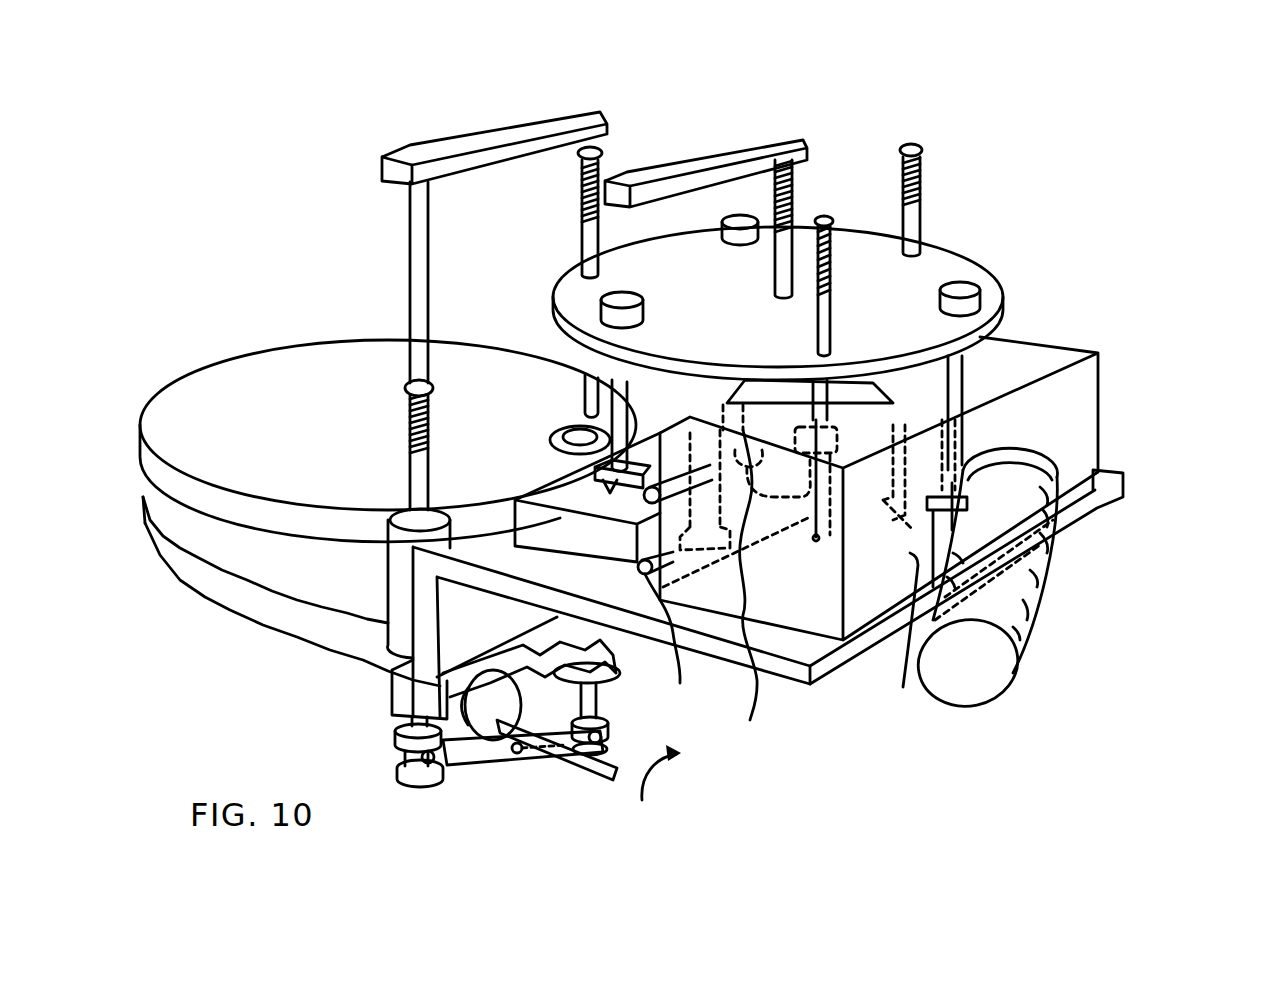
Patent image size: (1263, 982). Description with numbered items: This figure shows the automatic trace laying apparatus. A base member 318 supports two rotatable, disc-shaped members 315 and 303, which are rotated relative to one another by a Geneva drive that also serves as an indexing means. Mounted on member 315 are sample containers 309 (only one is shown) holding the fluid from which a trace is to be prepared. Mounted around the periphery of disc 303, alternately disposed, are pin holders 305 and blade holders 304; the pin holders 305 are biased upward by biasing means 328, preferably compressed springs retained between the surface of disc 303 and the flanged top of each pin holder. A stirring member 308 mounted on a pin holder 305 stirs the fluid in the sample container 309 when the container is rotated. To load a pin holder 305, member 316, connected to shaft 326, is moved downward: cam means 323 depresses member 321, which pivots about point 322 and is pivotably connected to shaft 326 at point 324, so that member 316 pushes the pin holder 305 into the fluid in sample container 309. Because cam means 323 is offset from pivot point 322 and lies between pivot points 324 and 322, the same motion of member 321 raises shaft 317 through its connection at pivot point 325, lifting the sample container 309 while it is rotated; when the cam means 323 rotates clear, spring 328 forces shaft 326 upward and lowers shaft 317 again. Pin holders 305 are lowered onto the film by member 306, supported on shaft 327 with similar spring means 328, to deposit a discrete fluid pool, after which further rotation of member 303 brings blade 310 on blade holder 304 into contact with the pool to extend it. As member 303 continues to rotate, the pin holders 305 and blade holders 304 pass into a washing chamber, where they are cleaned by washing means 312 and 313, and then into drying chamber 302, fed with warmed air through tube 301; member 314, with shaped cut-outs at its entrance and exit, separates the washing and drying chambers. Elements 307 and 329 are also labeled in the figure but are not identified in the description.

The tube 301 is at (1006, 665).
The drying chamber 302 is at (1070, 392).
The rotatable member 303 is at (965, 268).
The blade holders 304 is at (965, 283).
The pin holders 305 is at (905, 195).
The member 306 is at (728, 160).
The connector 307 is at (808, 527).
The stirring member 308 is at (827, 543).
The sample container 309 is at (555, 420).
The blade 310 is at (578, 490).
The washing means 312 is at (675, 591).
The washing means 313 is at (756, 589).
The member 314 is at (899, 640).
The rotatable member 315 is at (210, 383).
The member 316 is at (553, 124).
The shaft 317 is at (583, 696).
The base member 318 is at (190, 597).
The member 321 is at (480, 763).
The pivot point 322 is at (518, 754).
The cam means 323 is at (400, 733).
The pivot point 324 is at (424, 765).
The pivot point 325 is at (607, 736).
The shaft 326 is at (408, 253).
The shaft 327 is at (795, 197).
The biasing means 328 is at (583, 208).
The mounting block 329 is at (608, 541).